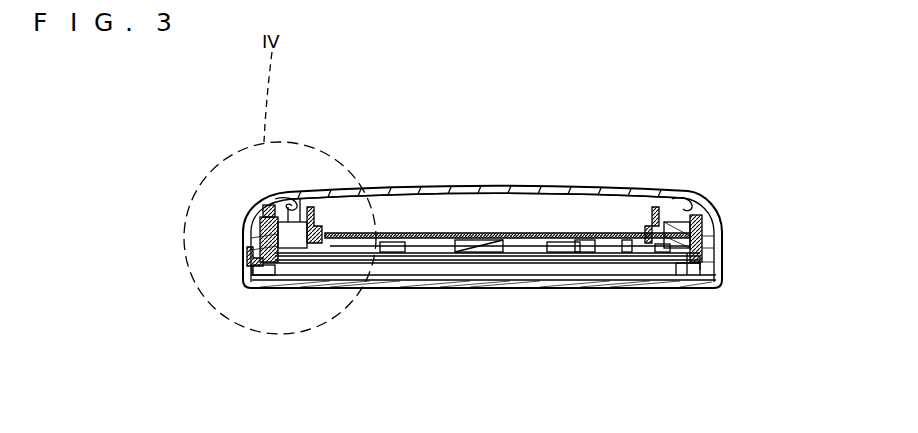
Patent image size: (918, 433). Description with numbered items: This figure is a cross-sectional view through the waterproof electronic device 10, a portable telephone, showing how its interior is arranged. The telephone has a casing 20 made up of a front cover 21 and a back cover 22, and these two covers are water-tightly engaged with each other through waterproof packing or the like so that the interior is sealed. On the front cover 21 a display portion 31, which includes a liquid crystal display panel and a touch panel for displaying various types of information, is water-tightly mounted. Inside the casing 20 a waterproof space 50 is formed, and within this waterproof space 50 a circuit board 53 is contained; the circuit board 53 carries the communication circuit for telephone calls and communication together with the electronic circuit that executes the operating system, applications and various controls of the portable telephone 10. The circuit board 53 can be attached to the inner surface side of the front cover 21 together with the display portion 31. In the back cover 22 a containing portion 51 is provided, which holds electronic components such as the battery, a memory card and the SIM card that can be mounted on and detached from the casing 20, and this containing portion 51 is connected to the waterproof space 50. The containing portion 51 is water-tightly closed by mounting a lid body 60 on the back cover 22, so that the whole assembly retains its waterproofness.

The electronic device 10 is at (724, 79).
The casing 20 is at (203, 258).
The front cover 21 is at (250, 262).
The back cover 22 is at (245, 240).
The display portion 31 is at (446, 289).
The waterproof space 50 is at (550, 241).
The containing portion 51 is at (449, 216).
The circuit board 53 is at (552, 264).
The lid body 60 is at (527, 188).